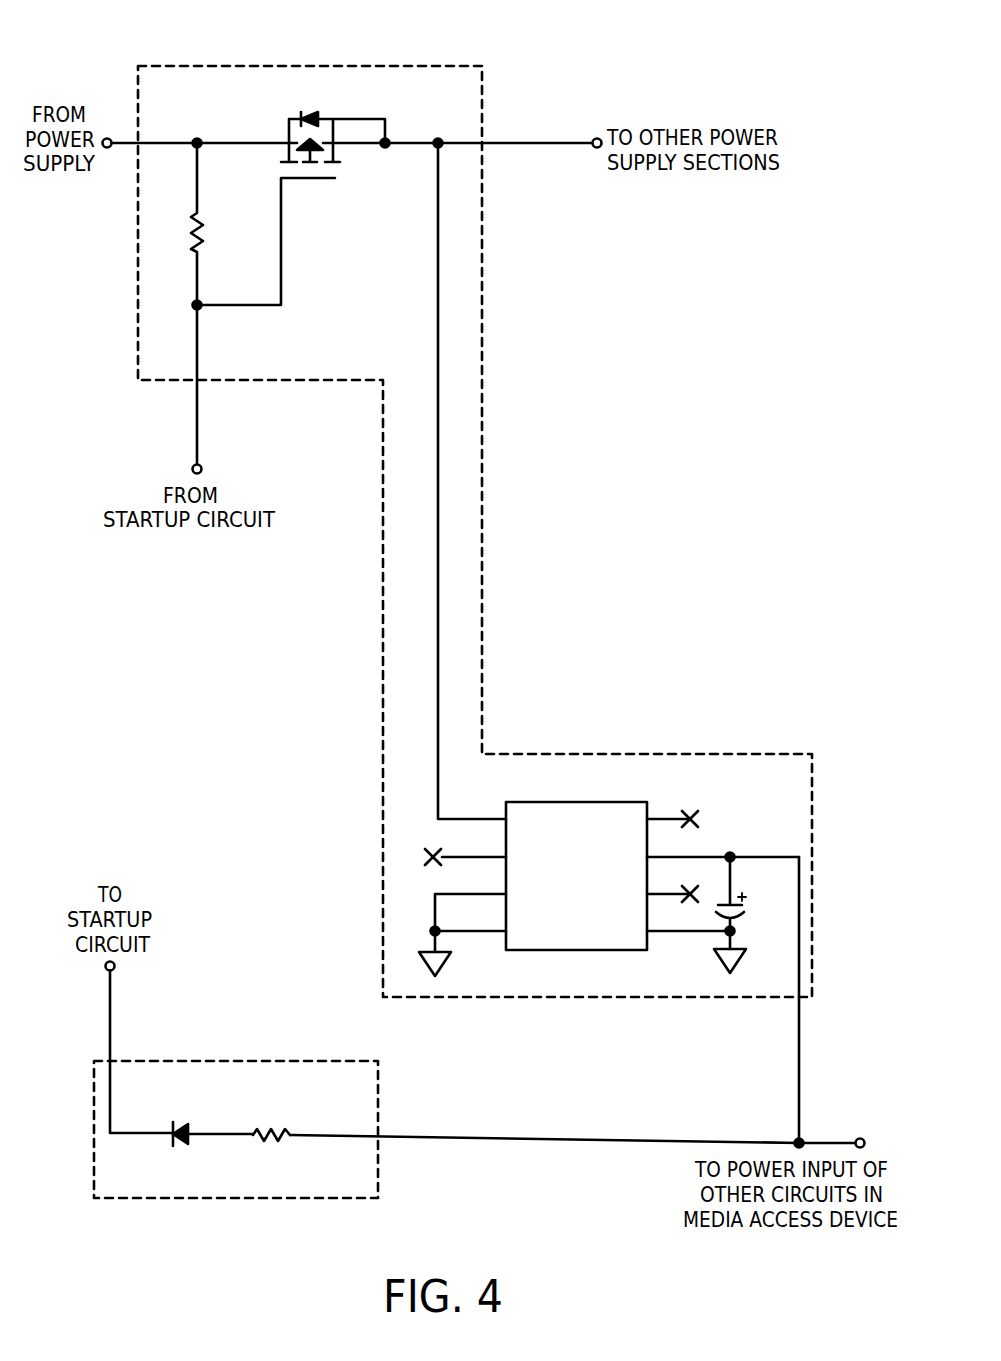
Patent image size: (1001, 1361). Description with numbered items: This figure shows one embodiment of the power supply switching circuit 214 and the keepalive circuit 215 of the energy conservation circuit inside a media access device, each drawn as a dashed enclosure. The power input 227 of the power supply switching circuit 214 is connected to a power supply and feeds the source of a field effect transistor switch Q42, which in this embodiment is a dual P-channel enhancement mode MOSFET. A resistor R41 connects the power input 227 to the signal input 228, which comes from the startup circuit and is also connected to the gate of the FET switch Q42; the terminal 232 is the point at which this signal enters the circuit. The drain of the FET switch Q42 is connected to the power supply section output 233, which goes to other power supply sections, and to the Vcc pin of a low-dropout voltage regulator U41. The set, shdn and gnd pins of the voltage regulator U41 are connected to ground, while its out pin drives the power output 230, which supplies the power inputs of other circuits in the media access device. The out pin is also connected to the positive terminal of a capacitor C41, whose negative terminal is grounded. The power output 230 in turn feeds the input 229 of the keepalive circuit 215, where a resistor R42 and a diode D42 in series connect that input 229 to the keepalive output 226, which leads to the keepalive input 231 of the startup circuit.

The power supply switching circuit 214 is at (432, 65).
The keepalive circuit 215 is at (195, 1198).
The output of keepalive circuit 226 is at (110, 1052).
The power input of power supply switching circuit 227 is at (137, 141).
The signal input of power supply switching circuit 228 is at (197, 392).
The input of keepalive circuit 229 is at (378, 1136).
The power output of power supply switching circuit 230 is at (797, 1006).
The keepalive input of startup circuit 231 is at (116, 965).
The terminal from startup circuit 232 is at (203, 469).
The power supply section output 233 is at (488, 143).
The field effect transistor switch Q42 is at (287, 135).
The resistor R41 is at (205, 230).
The resistor R42 is at (275, 1122).
The diode D42 is at (188, 1130).
The voltage regulator U41 is at (608, 802).
The capacitor C41 is at (735, 918).